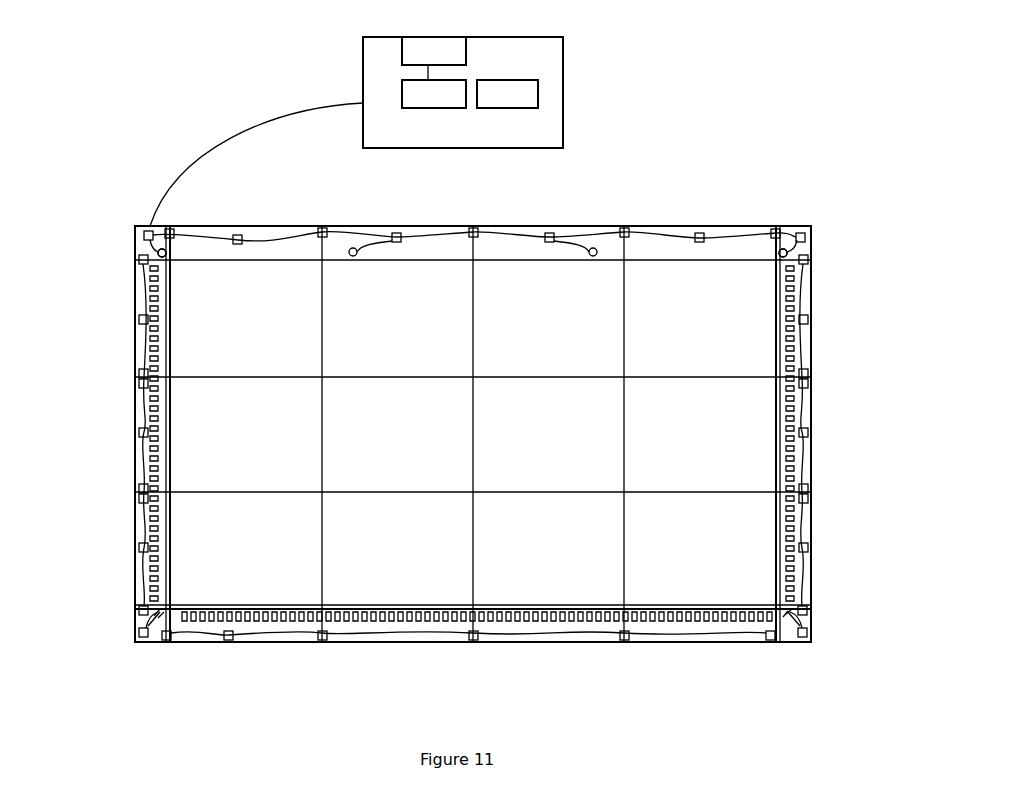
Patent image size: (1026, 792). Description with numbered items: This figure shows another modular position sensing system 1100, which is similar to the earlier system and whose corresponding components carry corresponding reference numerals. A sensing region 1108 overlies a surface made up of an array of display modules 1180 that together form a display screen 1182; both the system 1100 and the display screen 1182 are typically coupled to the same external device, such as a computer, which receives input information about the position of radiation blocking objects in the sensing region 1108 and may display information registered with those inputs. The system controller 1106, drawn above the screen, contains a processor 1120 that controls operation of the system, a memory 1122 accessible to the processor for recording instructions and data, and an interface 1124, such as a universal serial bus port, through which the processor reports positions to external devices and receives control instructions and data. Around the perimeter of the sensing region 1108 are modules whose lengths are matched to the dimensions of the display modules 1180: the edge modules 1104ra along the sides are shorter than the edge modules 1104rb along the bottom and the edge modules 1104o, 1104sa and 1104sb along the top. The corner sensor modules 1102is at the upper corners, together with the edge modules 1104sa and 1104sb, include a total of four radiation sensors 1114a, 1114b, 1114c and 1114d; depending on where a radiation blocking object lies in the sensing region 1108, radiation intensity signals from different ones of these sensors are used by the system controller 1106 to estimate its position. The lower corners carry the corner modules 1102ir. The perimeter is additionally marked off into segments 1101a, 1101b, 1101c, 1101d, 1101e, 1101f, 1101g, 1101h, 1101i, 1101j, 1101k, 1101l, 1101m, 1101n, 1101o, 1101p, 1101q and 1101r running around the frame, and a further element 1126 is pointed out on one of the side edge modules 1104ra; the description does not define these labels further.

The modular position sensing system 1100 is at (176, 128).
The system controller 1106 is at (463, 92).
The processor 1120 is at (434, 94).
The memory 1122 is at (507, 94).
The interface 1124 is at (434, 58).
The sensing region 1108 is at (473, 434).
The display modules 1180 is at (473, 432).
The display screen 1182 is at (397, 434).
The frame segment a 1101a is at (142, 242).
The frame segment b 1101b is at (139, 297).
The frame segment c 1101c is at (140, 397).
The frame segment d 1101d is at (140, 512).
The frame segment e 1101e is at (140, 616).
The frame segment f 1101f is at (260, 642).
The frame segment g 1101g is at (336, 642).
The frame segment h 1101h is at (476, 642).
The frame segment i 1101i is at (726, 642).
The frame segment j 1101j is at (812, 612).
The frame segment k 1101k is at (812, 515).
The frame segment l 1101l is at (812, 463).
The frame segment m 1101m is at (812, 348).
The frame segment n 1101n is at (806, 248).
The frame segment o 1101o is at (660, 226).
The frame segment p 1101p is at (594, 240).
The frame segment q 1101q is at (352, 226).
The frame segment r 1101r is at (250, 226).
The corner sensor modules 1102is is at (138, 248).
The inner sensor (bottom corners) 1102ir is at (146, 644).
The edge modules 1104o is at (270, 226).
The edge modules 1104sa is at (522, 232).
The edge modules 1104sb is at (396, 226).
The edge modules 1104ra is at (140, 338).
The edge modules 1104rb is at (200, 644).
The radiation sensor 1114a is at (170, 262).
The radiation sensor 1114b is at (354, 257).
The radiation sensor 1114c is at (592, 257).
The radiation sensor 1114d is at (779, 260).
The fin strip 1126 is at (162, 562).